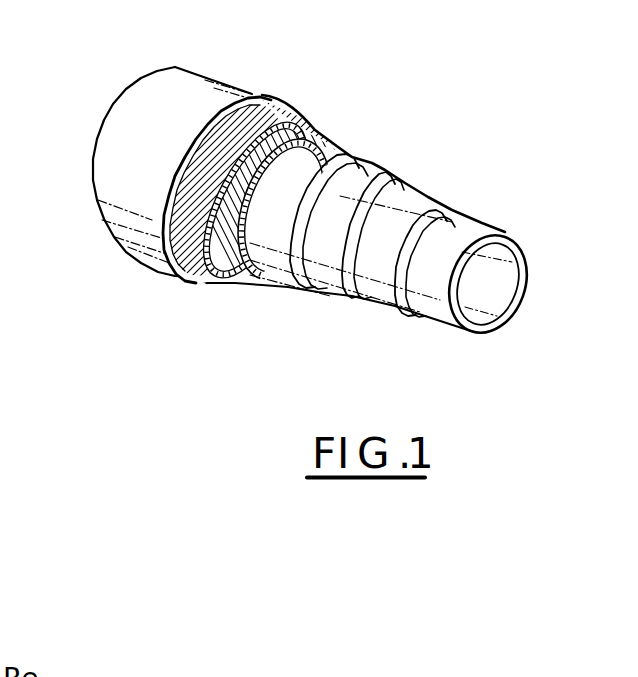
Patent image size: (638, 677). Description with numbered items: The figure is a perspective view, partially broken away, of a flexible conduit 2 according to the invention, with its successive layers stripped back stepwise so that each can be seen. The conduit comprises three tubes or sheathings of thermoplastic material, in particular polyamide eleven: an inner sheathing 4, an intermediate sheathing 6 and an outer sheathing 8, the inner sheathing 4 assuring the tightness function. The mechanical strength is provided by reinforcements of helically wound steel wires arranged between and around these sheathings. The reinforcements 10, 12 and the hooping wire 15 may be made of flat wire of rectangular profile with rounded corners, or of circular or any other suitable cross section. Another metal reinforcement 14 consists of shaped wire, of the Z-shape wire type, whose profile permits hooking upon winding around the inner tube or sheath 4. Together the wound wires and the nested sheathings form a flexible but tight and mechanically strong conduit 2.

The flexible conduit 2 is at (218, 76).
The outer sheathing 8 is at (232, 97).
The reinforcement wire 10 is at (270, 112).
The reinforcement wire 12 is at (234, 282).
The intermediate sheathing 6 is at (341, 150).
The hooping wire 15 is at (383, 168).
The metal reinforcement 14 is at (437, 194).
The inner sheathing 4 is at (481, 228).